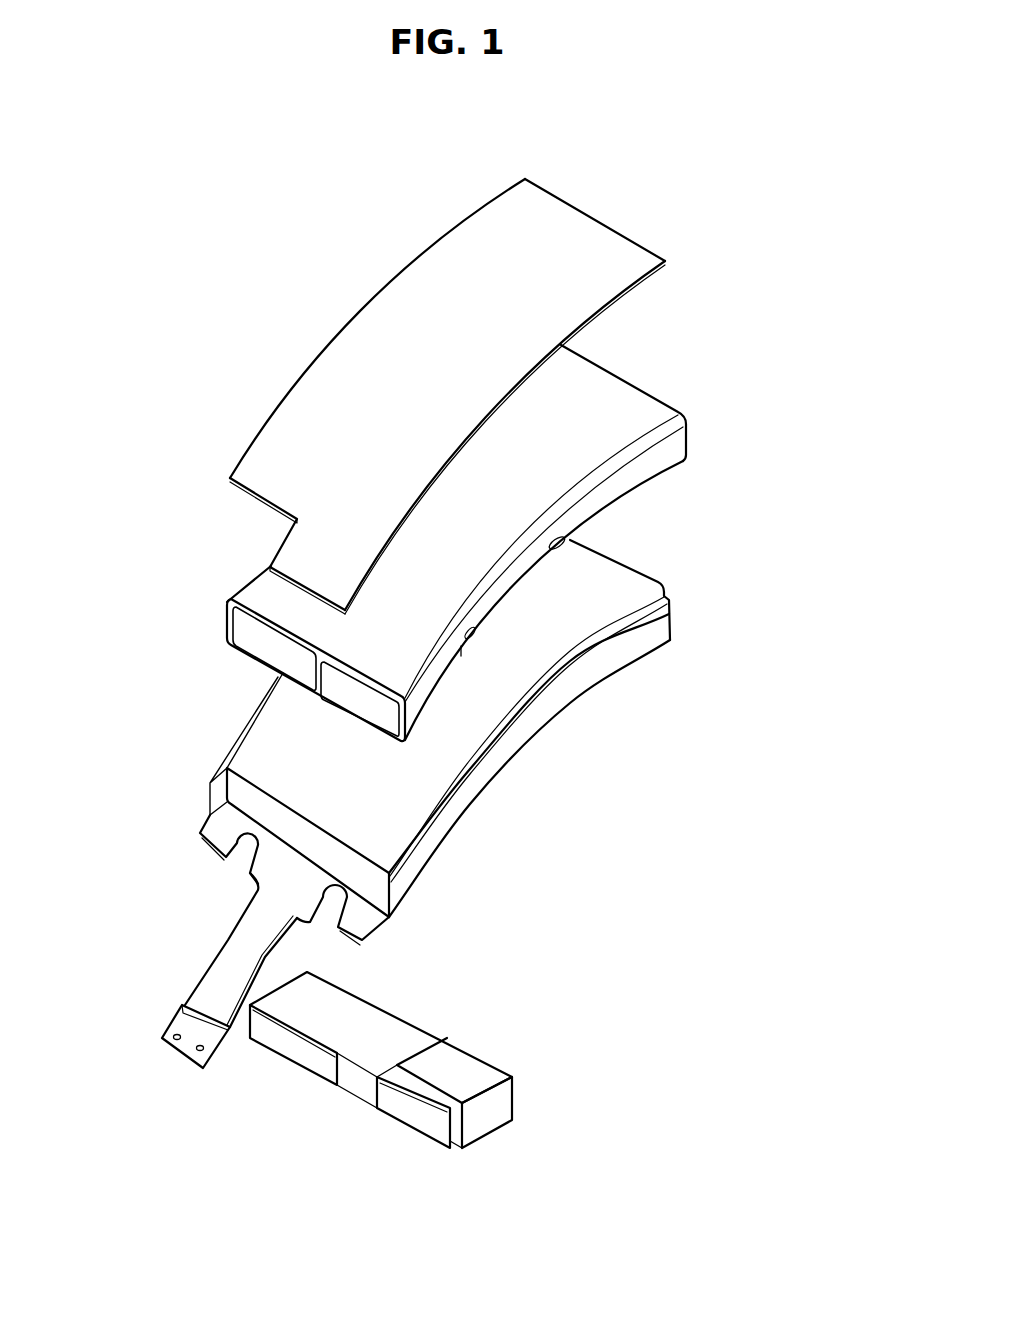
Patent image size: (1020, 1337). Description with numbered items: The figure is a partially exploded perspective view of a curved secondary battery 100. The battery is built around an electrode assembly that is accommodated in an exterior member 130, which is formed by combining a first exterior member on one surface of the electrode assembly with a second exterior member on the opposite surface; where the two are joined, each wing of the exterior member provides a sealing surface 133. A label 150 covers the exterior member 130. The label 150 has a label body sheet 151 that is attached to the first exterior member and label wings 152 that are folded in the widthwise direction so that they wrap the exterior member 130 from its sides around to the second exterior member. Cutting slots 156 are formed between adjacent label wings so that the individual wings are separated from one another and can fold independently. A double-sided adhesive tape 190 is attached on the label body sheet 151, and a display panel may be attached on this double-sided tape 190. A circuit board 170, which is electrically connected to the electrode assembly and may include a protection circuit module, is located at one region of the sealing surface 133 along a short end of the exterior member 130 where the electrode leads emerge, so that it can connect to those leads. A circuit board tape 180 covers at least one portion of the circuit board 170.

The curved secondary battery 100 is at (203, 262).
The double-sided adhesive tape 190 is at (610, 212).
The label 150 is at (646, 376).
The label body sheet 151 is at (447, 507).
The label wings 152 is at (678, 448).
The cutting slots 156 is at (557, 549).
The exterior member 130 is at (639, 554).
The sealing surface 133 is at (389, 918).
The circuit board 170 is at (193, 881).
The circuit board tape 180 is at (485, 1044).